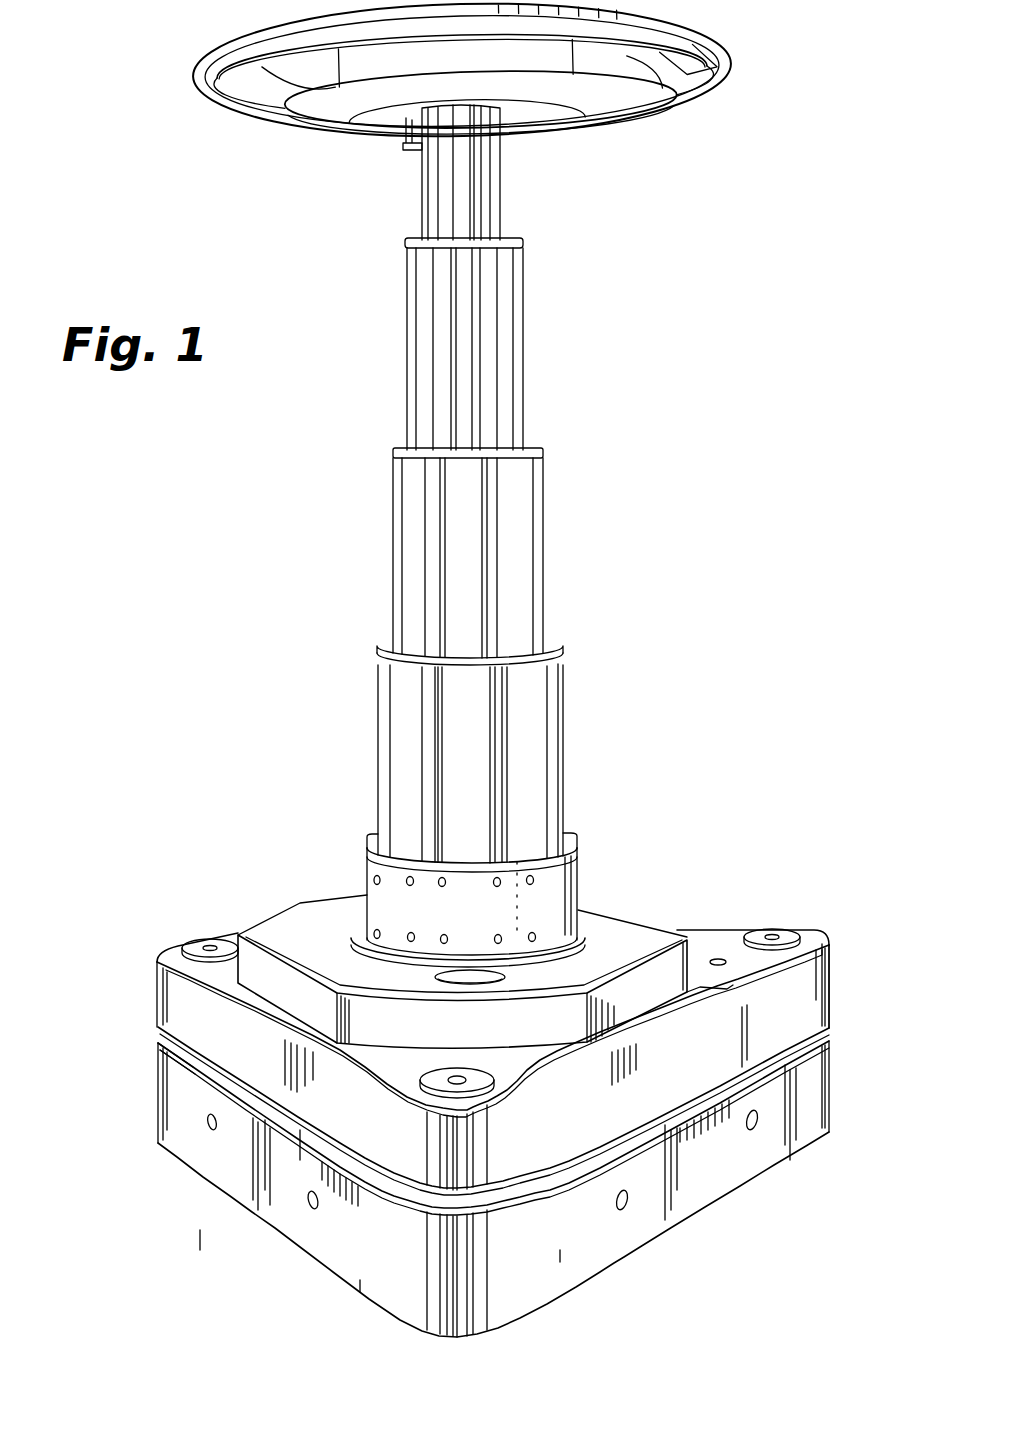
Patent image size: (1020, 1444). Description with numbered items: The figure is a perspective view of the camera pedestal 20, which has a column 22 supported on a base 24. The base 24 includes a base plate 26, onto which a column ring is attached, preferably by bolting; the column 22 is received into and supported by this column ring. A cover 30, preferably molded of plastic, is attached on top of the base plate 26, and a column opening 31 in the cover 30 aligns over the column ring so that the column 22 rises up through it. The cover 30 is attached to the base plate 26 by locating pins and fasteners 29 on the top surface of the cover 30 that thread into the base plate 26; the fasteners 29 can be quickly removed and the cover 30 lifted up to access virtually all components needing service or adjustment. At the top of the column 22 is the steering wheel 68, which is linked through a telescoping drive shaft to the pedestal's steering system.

The camera pedestal 20 is at (305, 566).
The column 22 is at (538, 349).
The base 24 is at (720, 922).
The base plate 26 is at (830, 1036).
The fasteners 29 is at (157, 1041).
The cover 30 is at (829, 966).
The column opening 31 is at (582, 932).
The steering wheel 68 is at (727, 66).